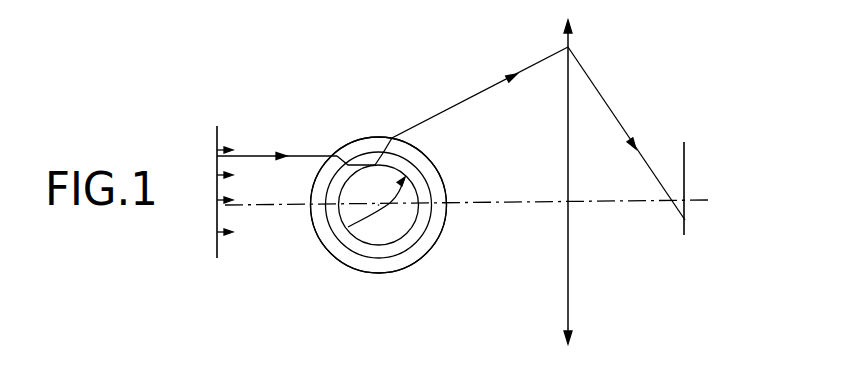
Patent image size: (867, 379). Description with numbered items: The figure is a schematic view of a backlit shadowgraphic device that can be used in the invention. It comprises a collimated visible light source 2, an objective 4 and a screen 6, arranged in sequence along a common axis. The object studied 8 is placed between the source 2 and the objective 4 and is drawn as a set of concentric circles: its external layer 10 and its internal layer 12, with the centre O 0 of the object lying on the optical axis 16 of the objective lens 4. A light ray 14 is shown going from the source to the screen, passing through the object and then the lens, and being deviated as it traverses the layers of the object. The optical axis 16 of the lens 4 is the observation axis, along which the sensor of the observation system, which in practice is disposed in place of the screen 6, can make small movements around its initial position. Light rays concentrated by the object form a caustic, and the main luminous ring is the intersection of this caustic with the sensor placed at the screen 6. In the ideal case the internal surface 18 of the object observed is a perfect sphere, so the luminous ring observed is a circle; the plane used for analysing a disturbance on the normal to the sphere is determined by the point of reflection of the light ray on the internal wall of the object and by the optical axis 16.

The centre of the object 0 is at (378, 193).
The collimated visible light source 2 is at (217, 218).
The objective 4 is at (568, 243).
The screen 6 is at (684, 168).
The object studied 8 is at (362, 126).
The external layer 10 is at (397, 245).
The internal layer 12 is at (444, 220).
The light ray 14 is at (477, 92).
The optical axis 16 is at (627, 200).
The internal surface 18 is at (342, 237).